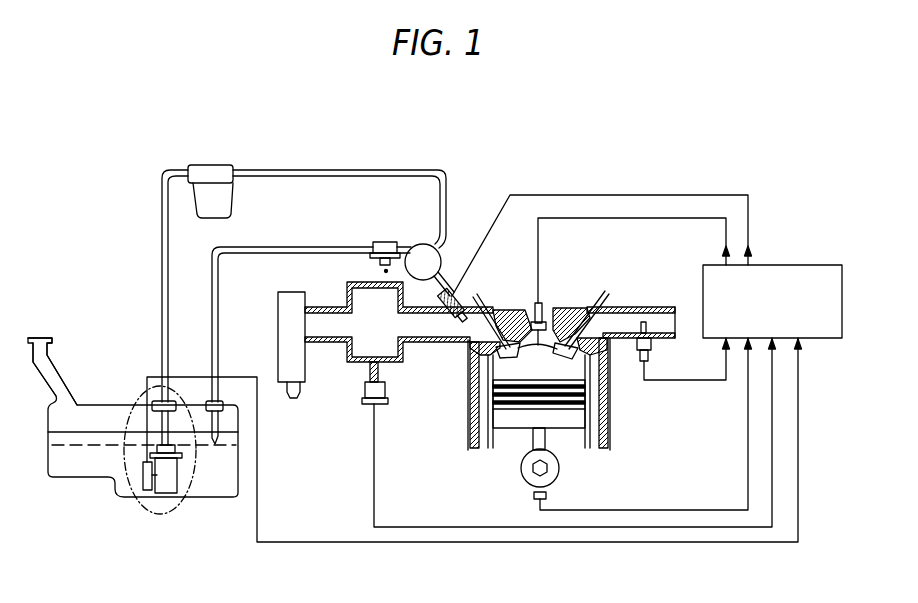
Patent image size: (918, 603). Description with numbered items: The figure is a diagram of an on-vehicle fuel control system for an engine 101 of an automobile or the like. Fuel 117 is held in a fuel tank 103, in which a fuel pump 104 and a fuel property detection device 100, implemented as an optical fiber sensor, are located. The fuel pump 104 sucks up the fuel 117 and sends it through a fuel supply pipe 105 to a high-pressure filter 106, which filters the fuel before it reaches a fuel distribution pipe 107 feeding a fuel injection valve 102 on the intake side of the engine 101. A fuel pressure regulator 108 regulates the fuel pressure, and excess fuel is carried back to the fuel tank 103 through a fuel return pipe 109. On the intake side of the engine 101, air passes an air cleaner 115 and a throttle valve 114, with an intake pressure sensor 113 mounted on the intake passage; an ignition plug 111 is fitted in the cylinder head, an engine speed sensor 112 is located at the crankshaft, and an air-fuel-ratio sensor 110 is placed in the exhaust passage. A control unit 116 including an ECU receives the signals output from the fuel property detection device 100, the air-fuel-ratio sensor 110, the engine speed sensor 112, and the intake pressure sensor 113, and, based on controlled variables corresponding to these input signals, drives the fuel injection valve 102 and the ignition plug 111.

The fuel property detection device 100 is at (146, 494).
The engine 101 is at (600, 416).
The fuel injection valve 102 is at (456, 300).
The fuel tank 103 is at (84, 480).
The fuel pump 104 is at (168, 494).
The fuel supply pipe 105 is at (162, 273).
The high-pressure filter 106 is at (210, 167).
The fuel distribution pipe 107 is at (422, 244).
The fuel pressure regulator 108 is at (381, 242).
The fuel return pipe 109 is at (219, 278).
The air-fuel-ratio sensor 110 is at (652, 350).
The ignition plug 111 is at (543, 303).
The engine speed sensor 112 is at (548, 494).
The intake pressure sensor 113 is at (386, 389).
The throttle valve 114 is at (320, 313).
The air cleaner 115 is at (289, 399).
The control unit 116 is at (810, 265).
The fuel 117 is at (55, 462).